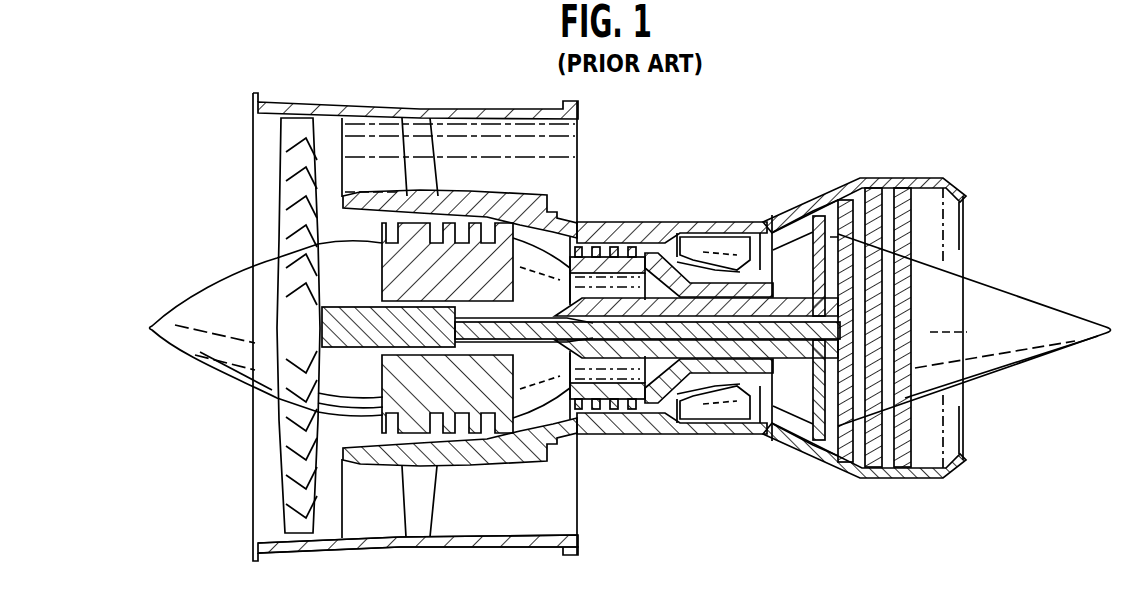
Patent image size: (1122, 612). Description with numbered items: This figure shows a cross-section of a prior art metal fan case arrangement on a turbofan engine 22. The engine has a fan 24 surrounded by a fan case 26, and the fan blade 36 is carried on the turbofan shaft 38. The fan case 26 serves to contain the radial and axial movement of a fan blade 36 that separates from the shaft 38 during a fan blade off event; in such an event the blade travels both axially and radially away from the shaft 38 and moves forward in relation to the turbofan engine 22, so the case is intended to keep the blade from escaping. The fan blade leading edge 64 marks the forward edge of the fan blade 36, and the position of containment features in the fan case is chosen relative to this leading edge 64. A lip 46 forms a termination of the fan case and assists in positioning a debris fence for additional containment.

The turbofan engine 22 is at (785, 102).
The fan 24 is at (300, 470).
The fan case 26 is at (287, 105).
The fan blade 36 is at (300, 260).
The turbofan shaft 38 is at (352, 348).
The lip 46 is at (253, 93).
The fan blade leading edge 64 is at (253, 162).